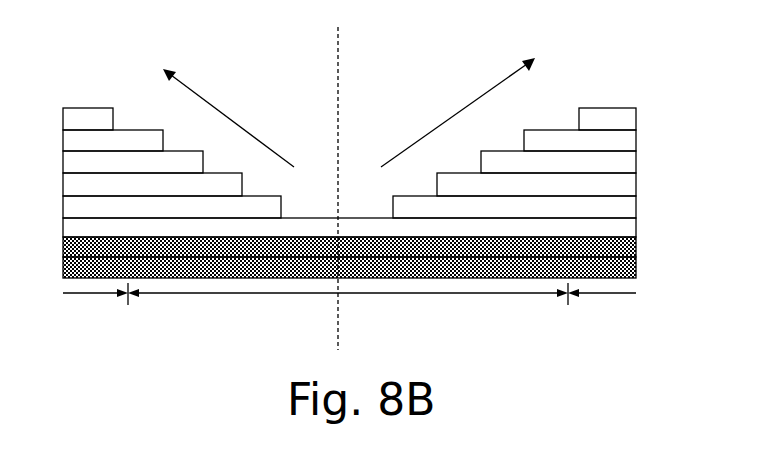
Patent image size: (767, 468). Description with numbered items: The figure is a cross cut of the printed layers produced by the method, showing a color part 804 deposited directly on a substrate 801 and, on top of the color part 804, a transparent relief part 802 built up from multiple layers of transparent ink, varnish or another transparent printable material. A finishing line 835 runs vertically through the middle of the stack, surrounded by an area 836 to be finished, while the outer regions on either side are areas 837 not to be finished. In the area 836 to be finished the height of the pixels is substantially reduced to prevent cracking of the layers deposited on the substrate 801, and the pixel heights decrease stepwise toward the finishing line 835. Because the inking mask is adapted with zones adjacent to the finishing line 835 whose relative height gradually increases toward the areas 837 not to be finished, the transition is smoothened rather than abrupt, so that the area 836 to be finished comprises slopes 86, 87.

The substrate 801 is at (636, 267).
The transparent relief part 802 is at (636, 162).
The color part 804 is at (636, 243).
The finishing line 835 is at (338, 42).
The area to be finished 836 is at (207, 295).
The area not to be finished 837 is at (100, 295).
The slope 86 is at (223, 110).
The slope 87 is at (420, 138).